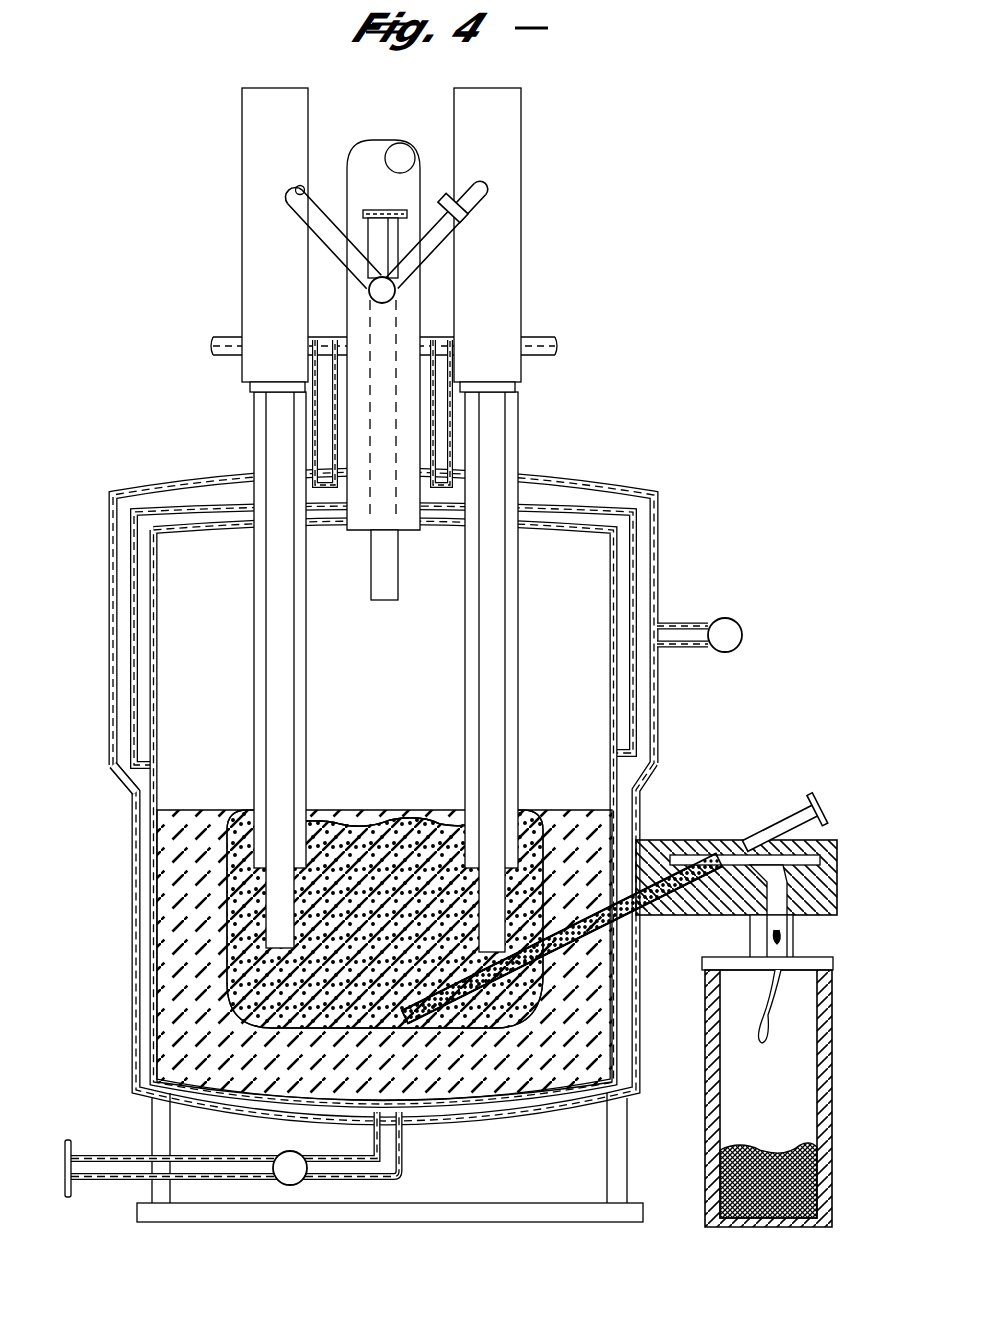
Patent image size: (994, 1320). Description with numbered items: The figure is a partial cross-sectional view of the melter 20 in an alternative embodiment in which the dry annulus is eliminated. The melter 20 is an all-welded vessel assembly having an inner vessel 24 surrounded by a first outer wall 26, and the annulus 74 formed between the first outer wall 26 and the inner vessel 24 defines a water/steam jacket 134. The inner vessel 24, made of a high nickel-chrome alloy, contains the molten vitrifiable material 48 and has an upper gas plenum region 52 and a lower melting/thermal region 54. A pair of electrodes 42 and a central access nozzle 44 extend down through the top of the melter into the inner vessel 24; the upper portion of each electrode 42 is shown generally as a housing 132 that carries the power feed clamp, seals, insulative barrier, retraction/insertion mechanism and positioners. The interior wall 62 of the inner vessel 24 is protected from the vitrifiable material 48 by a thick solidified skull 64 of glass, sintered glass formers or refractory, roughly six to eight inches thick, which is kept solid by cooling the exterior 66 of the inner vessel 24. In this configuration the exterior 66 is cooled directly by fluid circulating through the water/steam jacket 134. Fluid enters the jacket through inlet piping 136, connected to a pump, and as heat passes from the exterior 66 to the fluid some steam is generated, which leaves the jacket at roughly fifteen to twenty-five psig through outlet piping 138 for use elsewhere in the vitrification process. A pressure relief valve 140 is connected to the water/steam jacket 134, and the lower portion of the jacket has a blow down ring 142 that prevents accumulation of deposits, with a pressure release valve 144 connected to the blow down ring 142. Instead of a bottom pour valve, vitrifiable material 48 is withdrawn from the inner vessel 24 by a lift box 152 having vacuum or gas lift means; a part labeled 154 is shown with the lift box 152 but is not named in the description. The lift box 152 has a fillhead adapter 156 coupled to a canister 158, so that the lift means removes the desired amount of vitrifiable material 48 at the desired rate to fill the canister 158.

The melter 20 is at (647, 307).
The inner vessel 24 is at (147, 717).
The first outer wall 26 is at (126, 569).
The electrodes 42 is at (258, 728).
The central access nozzle 44 is at (408, 440).
The vitrifiable material 48 is at (363, 847).
The gas plenum region 52 is at (393, 661).
The melting/thermal region 54 is at (250, 935).
The interior wall 62 is at (165, 850).
The skull 64 is at (175, 890).
The exterior 66 is at (136, 774).
The annulus 74 is at (140, 662).
The housing 132 is at (257, 133).
The water/steam jacket 134 is at (126, 618).
The inlet piping 136 is at (598, 322).
The outlet piping 138 is at (318, 433).
The pressure relief valve 140 is at (740, 597).
The blow down ring 142 is at (120, 1153).
The pressure release valve 144 is at (286, 1151).
The lift box 152 is at (622, 941).
The stopper rod 154 is at (760, 830).
The fillhead adapter 156 is at (795, 935).
The canister 158 is at (832, 1031).